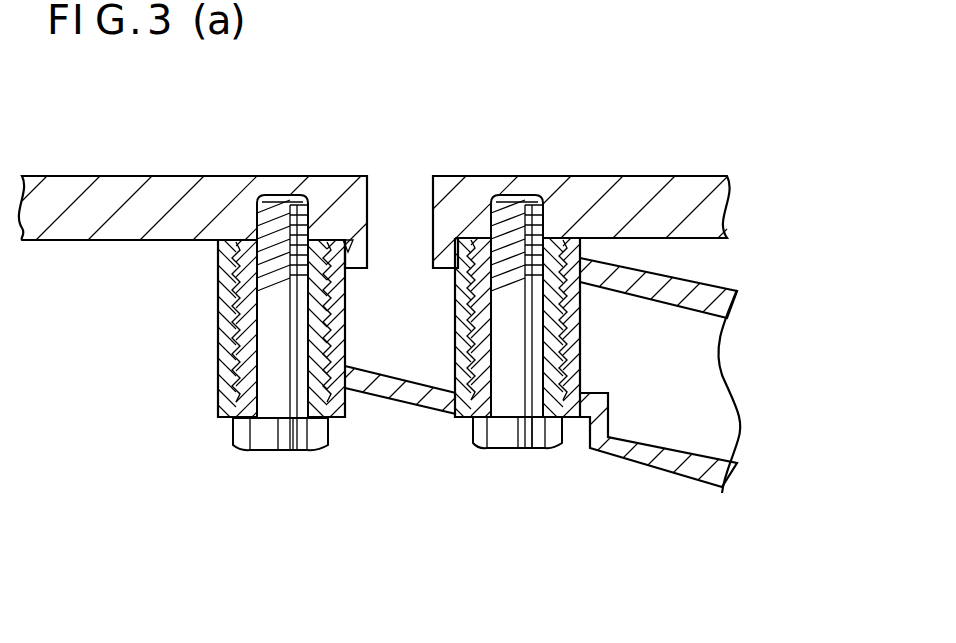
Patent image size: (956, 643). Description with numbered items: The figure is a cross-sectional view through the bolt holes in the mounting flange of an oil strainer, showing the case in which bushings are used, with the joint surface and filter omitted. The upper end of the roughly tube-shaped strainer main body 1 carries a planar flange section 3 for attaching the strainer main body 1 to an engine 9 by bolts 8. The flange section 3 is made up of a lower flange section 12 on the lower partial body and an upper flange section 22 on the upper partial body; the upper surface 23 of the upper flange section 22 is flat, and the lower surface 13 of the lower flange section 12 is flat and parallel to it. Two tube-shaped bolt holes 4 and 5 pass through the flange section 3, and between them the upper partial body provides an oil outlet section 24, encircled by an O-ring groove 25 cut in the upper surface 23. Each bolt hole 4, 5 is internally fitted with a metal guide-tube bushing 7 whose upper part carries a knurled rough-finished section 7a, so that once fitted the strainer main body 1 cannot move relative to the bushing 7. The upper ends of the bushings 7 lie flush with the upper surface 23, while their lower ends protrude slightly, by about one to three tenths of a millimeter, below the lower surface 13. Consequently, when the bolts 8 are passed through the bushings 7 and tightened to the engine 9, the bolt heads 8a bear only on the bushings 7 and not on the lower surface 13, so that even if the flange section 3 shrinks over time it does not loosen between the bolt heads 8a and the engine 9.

The strainer main body 1 is at (675, 473).
The flange section 3 is at (580, 245).
The bolt hole 4 is at (322, 402).
The bolt hole 5 is at (560, 432).
The bushing 7 is at (220, 418).
The rough-finished section 7a is at (218, 296).
The bolt 8 is at (307, 451).
The bolt head 8a is at (258, 440).
The engine 9 is at (195, 190).
The lower flange section 12 is at (218, 368).
The lower surface 13 is at (232, 418).
The upper flange section 22 is at (218, 266).
The upper surface 23 is at (230, 240).
The oil outlet section 24 is at (433, 252).
The O-ring groove 25 is at (453, 240).